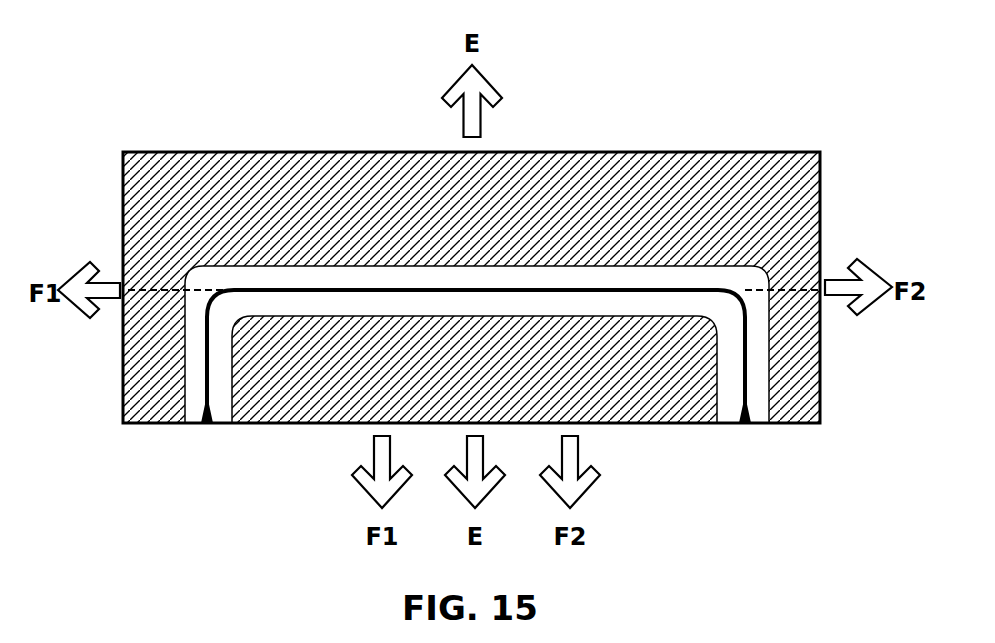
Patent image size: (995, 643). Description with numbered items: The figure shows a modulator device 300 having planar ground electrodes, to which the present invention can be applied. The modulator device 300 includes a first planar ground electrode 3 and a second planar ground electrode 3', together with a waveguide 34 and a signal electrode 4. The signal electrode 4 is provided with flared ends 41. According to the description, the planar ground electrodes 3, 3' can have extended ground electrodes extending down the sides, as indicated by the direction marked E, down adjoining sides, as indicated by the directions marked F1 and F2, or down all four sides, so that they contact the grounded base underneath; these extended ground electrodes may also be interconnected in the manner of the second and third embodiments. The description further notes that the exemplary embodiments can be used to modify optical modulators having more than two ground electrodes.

The first planar ground electrode 3 is at (471, 269).
The second planar ground electrode 3' is at (474, 404).
The signal electrode 4 is at (206, 318).
The waveguide 34 is at (157, 293).
The flared ends 41 is at (200, 427).
The modulator device 300 is at (723, 150).